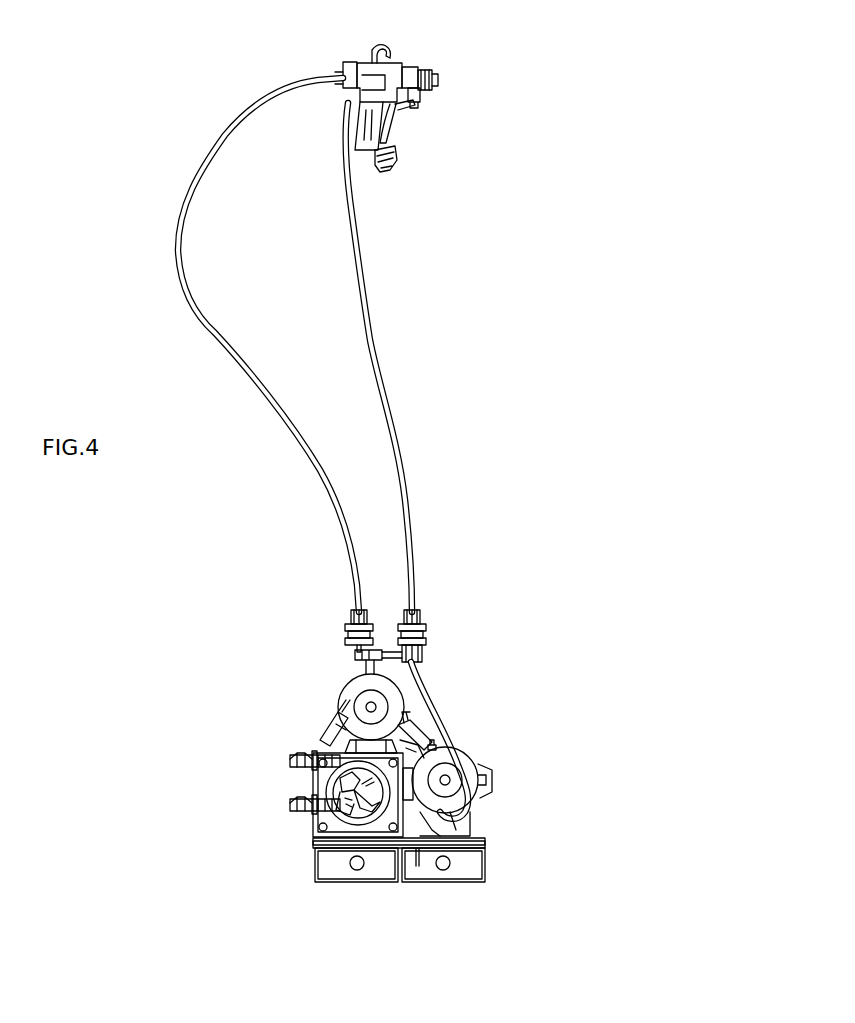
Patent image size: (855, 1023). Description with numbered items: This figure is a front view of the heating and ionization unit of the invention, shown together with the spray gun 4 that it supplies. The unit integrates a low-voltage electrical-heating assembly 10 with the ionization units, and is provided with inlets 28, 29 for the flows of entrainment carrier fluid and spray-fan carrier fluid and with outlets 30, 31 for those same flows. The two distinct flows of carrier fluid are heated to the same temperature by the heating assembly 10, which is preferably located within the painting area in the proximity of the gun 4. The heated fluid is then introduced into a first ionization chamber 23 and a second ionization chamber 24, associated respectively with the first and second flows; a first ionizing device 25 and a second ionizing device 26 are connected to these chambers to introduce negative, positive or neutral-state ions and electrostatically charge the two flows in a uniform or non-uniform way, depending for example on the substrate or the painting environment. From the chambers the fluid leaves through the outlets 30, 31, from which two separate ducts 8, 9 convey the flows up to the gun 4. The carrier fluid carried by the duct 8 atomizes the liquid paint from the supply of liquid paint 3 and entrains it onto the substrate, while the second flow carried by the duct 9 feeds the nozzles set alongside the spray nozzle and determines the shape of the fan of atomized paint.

The supply of liquid paint 3 is at (385, 178).
The gun 4 is at (390, 68).
The duct 8 is at (182, 237).
The duct 9 is at (362, 345).
The low-voltage electrical-heating assembly 10 is at (340, 785).
The first ionization chamber 23 is at (358, 690).
The second ionization chamber 24 is at (480, 770).
The first ionizing device 25 is at (430, 868).
The second ionizing device 26 is at (333, 868).
The inlet 28 is at (293, 757).
The inlet 29 is at (297, 810).
The outlet 30 is at (356, 612).
The outlet 31 is at (416, 608).